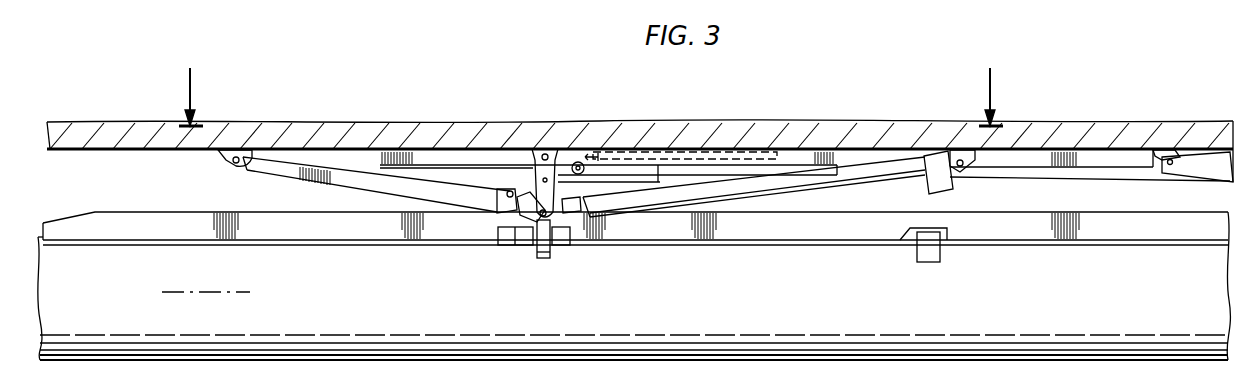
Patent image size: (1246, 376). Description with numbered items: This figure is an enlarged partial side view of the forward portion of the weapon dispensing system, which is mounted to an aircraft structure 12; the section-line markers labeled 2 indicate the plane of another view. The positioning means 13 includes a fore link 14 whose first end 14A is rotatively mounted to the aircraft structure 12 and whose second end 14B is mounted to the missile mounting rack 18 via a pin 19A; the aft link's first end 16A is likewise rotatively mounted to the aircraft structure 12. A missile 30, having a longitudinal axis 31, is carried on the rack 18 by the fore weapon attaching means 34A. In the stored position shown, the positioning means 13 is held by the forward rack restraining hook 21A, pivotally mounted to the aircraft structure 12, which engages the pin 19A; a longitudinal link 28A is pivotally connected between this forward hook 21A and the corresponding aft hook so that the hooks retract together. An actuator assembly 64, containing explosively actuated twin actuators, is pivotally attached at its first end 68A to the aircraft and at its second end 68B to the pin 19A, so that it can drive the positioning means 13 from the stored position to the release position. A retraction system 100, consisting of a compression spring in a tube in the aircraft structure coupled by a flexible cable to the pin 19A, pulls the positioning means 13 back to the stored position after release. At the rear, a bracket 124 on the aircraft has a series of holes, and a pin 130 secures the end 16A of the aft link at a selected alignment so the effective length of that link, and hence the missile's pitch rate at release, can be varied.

The section line of FIG. 2 is at (591, 84).
The aircraft structure 12 is at (416, 124).
The positioning means 13 is at (805, 168).
The fore link 14 is at (323, 170).
The first end of fore link 14A is at (260, 156).
The second end of fore link 14B is at (478, 190).
The first end of aft link 16A is at (1209, 165).
The missile mounting rack 18 is at (152, 203).
The pin 19A is at (545, 262).
The forward rack restraining hook 21A is at (547, 152).
The longitudinal link 28A is at (1103, 180).
The missile 30 is at (772, 310).
The longitudinal axis 31 is at (243, 292).
The fore weapon attaching means 34A is at (512, 252).
The actuator assembly 64 is at (867, 166).
The first end of actuator assembly 68A is at (932, 158).
The second end of actuator assembly 68B is at (582, 206).
The retraction system 100 is at (741, 158).
The bracket 124 is at (1160, 150).
The pin 130 is at (1170, 166).